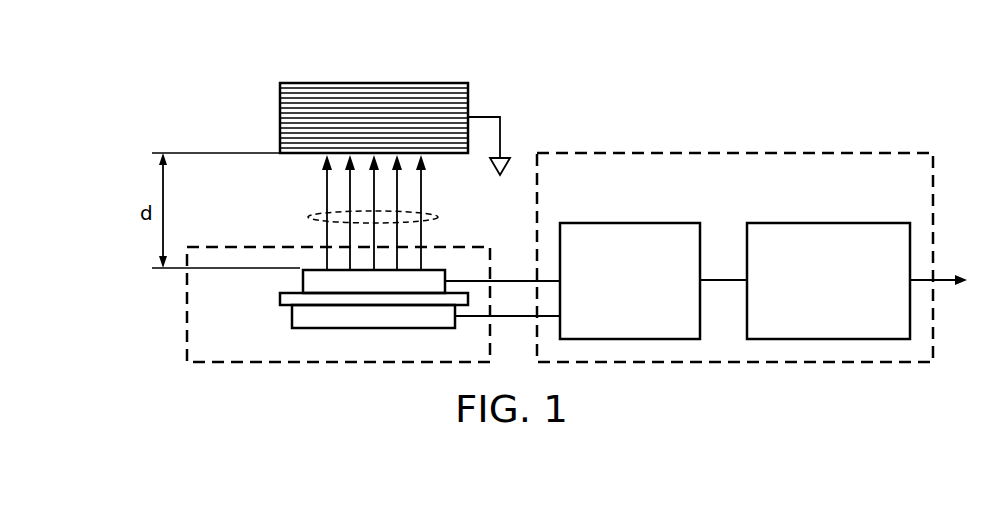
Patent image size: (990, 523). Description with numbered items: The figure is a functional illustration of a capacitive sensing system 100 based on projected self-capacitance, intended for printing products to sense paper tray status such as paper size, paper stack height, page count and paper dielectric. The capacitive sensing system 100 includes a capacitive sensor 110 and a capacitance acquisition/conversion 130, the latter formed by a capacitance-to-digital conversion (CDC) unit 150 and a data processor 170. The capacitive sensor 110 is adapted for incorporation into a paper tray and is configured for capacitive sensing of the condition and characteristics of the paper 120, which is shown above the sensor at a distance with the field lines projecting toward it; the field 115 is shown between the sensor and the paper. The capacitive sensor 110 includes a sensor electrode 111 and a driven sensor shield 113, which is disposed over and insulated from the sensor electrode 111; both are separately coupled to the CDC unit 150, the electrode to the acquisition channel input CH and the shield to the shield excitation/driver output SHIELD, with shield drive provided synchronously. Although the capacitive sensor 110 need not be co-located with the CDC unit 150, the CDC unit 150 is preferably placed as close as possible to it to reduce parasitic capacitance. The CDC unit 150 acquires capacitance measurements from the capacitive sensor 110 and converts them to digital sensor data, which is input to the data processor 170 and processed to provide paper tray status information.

The capacitive sensing system 100 is at (619, 100).
The capacitive sensor 110 is at (180, 308).
The sensor electrode 111 is at (300, 278).
The driven sensor shield 113 is at (292, 316).
The electric field 115 is at (318, 215).
The paper 120 is at (360, 76).
The capacitance acquisition/conversion 130 is at (736, 146).
The capacitance-to-digital conversion (CDC) unit 150 is at (630, 223).
The data processor 170 is at (828, 223).